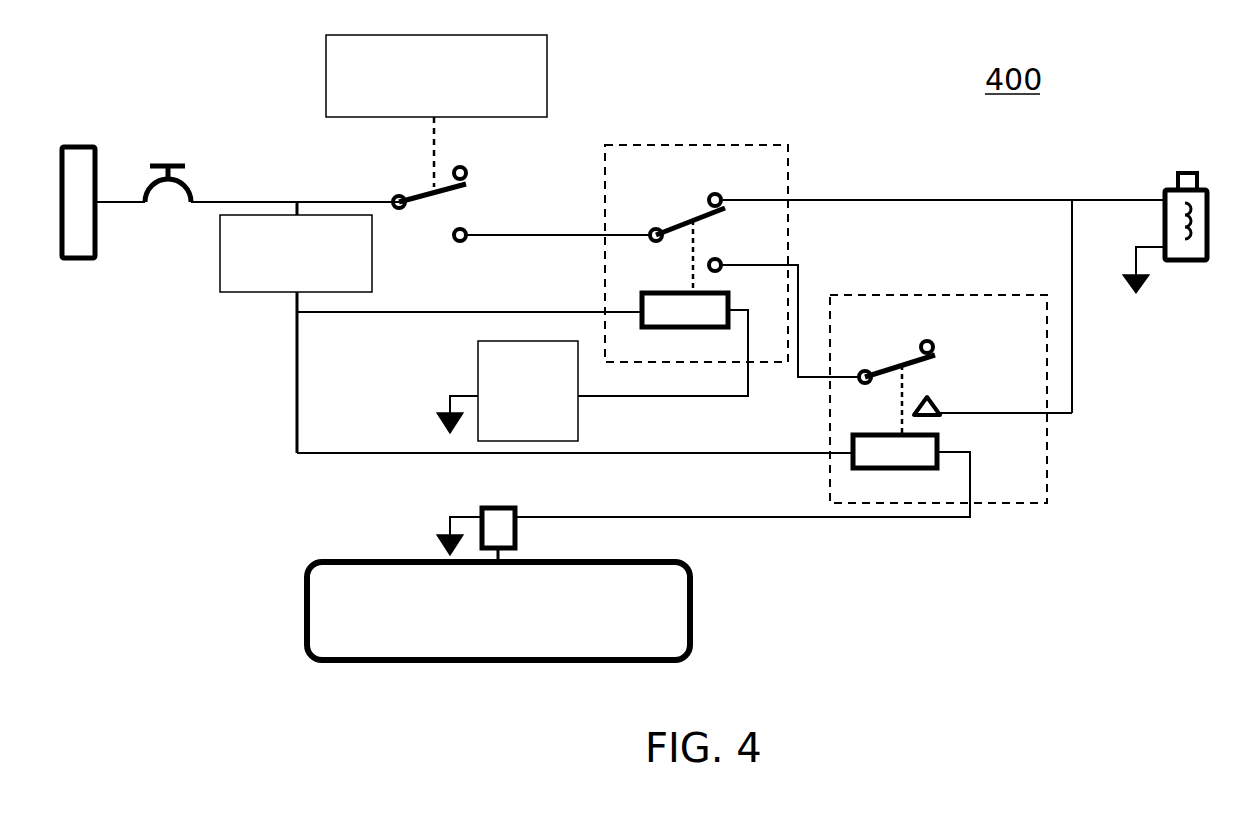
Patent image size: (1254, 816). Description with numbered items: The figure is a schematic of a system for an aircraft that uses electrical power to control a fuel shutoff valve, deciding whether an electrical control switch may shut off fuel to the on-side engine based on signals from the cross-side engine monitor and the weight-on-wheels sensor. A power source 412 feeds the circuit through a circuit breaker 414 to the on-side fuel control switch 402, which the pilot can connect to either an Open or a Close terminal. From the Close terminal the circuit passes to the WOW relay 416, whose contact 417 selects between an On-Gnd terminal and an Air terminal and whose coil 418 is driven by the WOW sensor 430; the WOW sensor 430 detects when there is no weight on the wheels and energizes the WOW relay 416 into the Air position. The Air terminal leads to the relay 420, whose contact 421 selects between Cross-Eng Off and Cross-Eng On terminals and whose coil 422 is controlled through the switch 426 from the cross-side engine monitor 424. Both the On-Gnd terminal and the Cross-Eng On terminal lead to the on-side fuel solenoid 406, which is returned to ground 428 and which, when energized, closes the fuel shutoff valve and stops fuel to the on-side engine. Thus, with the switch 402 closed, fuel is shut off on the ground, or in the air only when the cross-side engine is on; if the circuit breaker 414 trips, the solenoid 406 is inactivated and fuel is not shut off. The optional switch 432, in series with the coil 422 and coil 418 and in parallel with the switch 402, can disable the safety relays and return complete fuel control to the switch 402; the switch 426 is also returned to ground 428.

The on-side fuel control switch 402 is at (436, 138).
The on-side fuel solenoid 406 is at (1207, 242).
The power source 412 is at (73, 143).
The circuit breaker 414 is at (162, 157).
The WOW relay 416 is at (695, 143).
The contact 417 is at (697, 210).
The coil 418 is at (653, 327).
The relay 420 is at (937, 293).
The contact 421 is at (902, 353).
The coil 422 is at (870, 470).
The cross-side engine monitor 424 is at (498, 611).
The switch 426 is at (497, 507).
The ground 428 is at (779, 401).
The WOW sensor 430 is at (507, 391).
The optional switch 432 is at (296, 327).